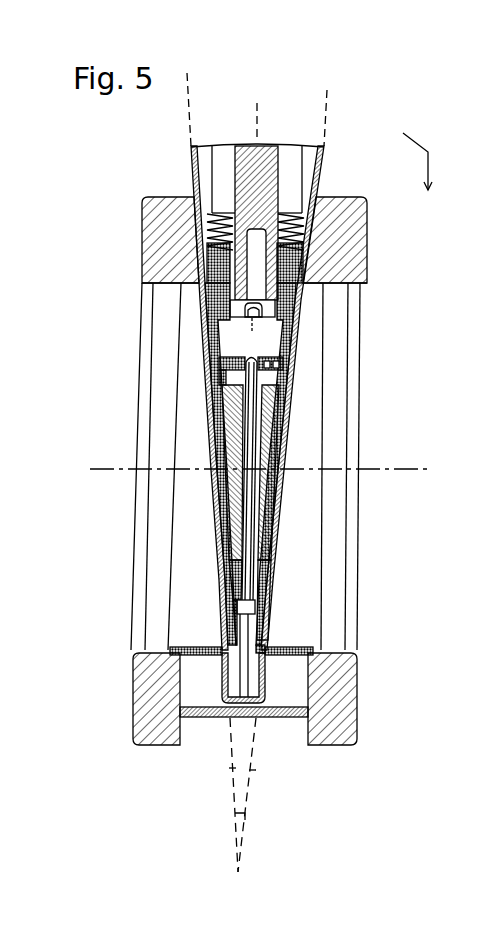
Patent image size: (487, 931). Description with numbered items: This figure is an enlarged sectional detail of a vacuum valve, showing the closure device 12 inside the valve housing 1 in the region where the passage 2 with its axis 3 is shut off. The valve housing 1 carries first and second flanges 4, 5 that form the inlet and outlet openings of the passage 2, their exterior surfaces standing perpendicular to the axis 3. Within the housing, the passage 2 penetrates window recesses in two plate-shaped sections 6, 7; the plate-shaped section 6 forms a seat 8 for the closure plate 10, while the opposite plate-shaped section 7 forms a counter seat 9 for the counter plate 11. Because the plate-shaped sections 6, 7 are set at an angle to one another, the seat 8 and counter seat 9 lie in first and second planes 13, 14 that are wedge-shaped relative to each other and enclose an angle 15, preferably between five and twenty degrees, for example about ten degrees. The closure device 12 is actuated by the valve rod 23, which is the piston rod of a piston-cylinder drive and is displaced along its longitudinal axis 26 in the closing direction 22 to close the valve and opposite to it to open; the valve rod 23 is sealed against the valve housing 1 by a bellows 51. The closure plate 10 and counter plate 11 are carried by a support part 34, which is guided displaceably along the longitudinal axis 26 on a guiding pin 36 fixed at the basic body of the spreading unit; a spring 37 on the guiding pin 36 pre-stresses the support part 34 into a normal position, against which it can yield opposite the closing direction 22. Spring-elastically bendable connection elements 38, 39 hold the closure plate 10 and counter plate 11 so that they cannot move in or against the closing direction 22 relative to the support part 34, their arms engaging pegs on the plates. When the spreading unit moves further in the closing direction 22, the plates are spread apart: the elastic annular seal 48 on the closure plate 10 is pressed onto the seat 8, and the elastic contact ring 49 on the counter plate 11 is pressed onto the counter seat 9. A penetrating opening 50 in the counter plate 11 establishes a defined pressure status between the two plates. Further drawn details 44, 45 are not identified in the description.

The valve housing 1 is at (330, 173).
The passage 2 is at (307, 508).
The axis 3 is at (123, 470).
The first flange 4 is at (140, 718).
The second flange 5 is at (312, 695).
The plate-shaped section 6 is at (195, 236).
The plate-shaped section 7 is at (327, 243).
The seat 8 is at (198, 266).
The counter seat 9 is at (310, 270).
The closure plate 10 is at (207, 323).
The counter plate 11 is at (298, 378).
The closure device 12 is at (284, 539).
The first plane 13 is at (233, 768).
The second plane 14 is at (252, 770).
The angle 15 is at (246, 818).
The closing direction 22 is at (410, 151).
The valve rod 23 is at (245, 167).
The longitudinal axis 26 is at (257, 125).
The support part 34 is at (276, 473).
The guiding pin 36 is at (247, 518).
The spring 37 is at (298, 407).
The connection element 38 is at (208, 430).
The connection element 39 is at (285, 425).
The bracket 44 is at (208, 383).
The needle holder 45 is at (226, 556).
The elastic annular seal 48 is at (223, 657).
The elastic contact ring 49 is at (268, 660).
The penetrating opening 50 is at (290, 318).
The bellows 51 is at (207, 210).